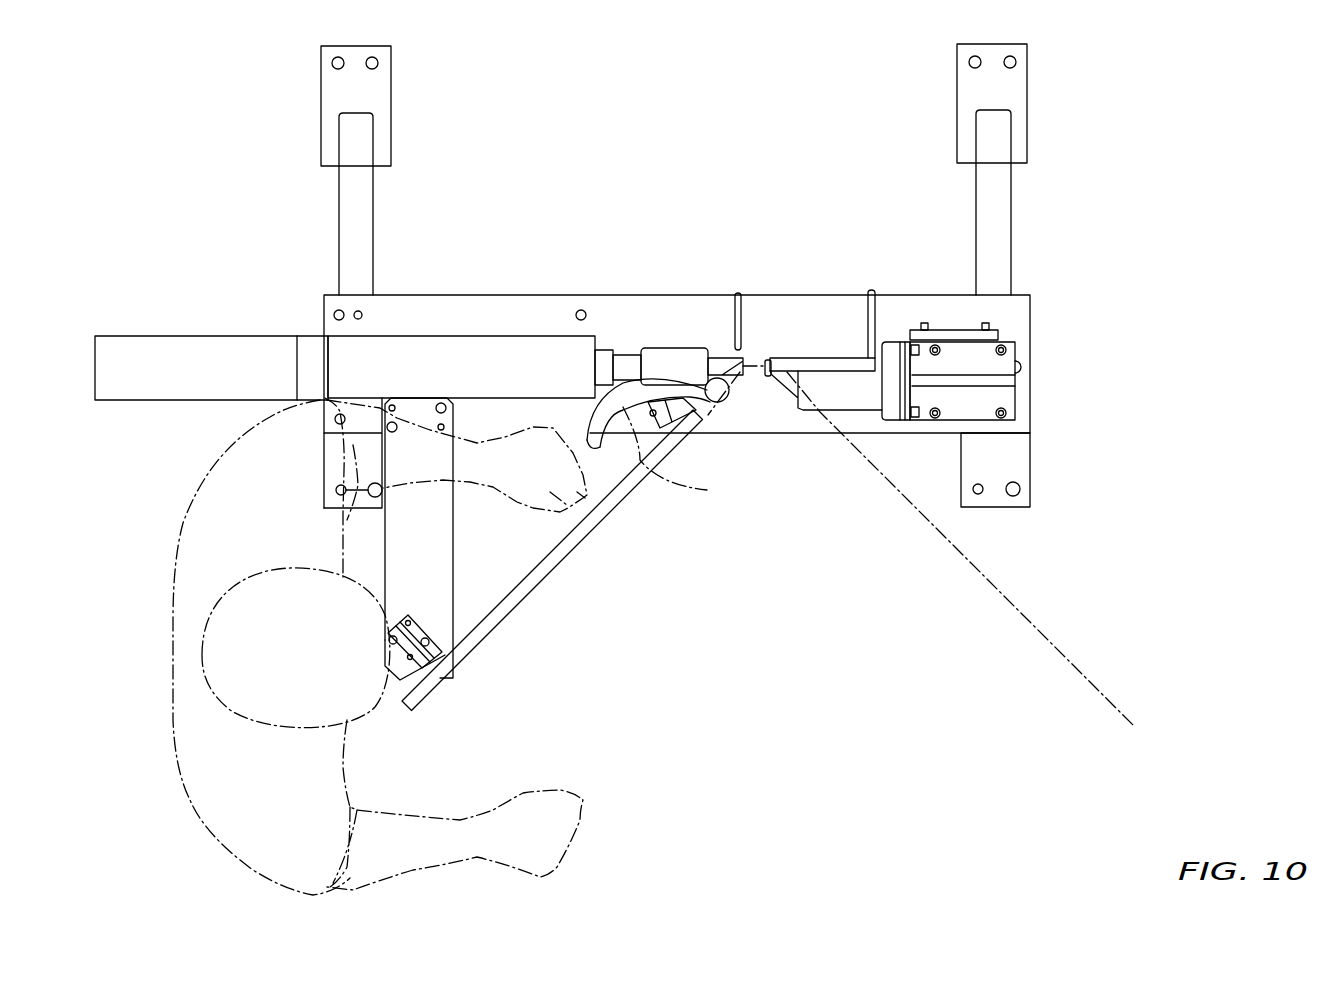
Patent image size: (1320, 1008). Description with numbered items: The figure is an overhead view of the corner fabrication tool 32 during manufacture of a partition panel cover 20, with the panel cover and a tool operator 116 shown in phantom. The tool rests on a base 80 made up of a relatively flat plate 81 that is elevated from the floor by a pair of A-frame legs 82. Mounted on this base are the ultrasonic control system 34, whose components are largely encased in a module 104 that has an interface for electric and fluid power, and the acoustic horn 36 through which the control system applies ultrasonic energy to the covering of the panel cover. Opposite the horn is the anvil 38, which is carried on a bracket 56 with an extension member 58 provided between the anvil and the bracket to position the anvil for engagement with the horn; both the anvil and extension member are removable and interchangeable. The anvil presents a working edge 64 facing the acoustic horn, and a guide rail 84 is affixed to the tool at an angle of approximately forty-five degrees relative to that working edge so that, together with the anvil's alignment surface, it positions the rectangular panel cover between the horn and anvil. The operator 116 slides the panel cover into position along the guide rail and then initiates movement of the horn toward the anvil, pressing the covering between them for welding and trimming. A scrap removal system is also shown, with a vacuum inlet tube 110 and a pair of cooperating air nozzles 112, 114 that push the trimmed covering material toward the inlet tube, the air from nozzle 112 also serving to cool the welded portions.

The partition panel cover 20 is at (1066, 655).
The corner fabrication tool 32 is at (711, 134).
The ultrasonic control system 34 is at (474, 340).
The acoustic horn 36 is at (718, 348).
The anvil 38 is at (783, 352).
The bracket 56 is at (1018, 353).
The extension member 58 is at (857, 402).
The working edge 64 is at (763, 368).
The base 80 is at (1033, 400).
The plate 81 is at (1016, 313).
The A-frame legs 82 is at (358, 188).
The guide rail 84 is at (553, 558).
The module 104 is at (148, 348).
The vacuum inlet tube 110 is at (624, 408).
The air nozzle 112 is at (831, 360).
The air nozzle 114 is at (739, 292).
The operator 116 is at (232, 813).